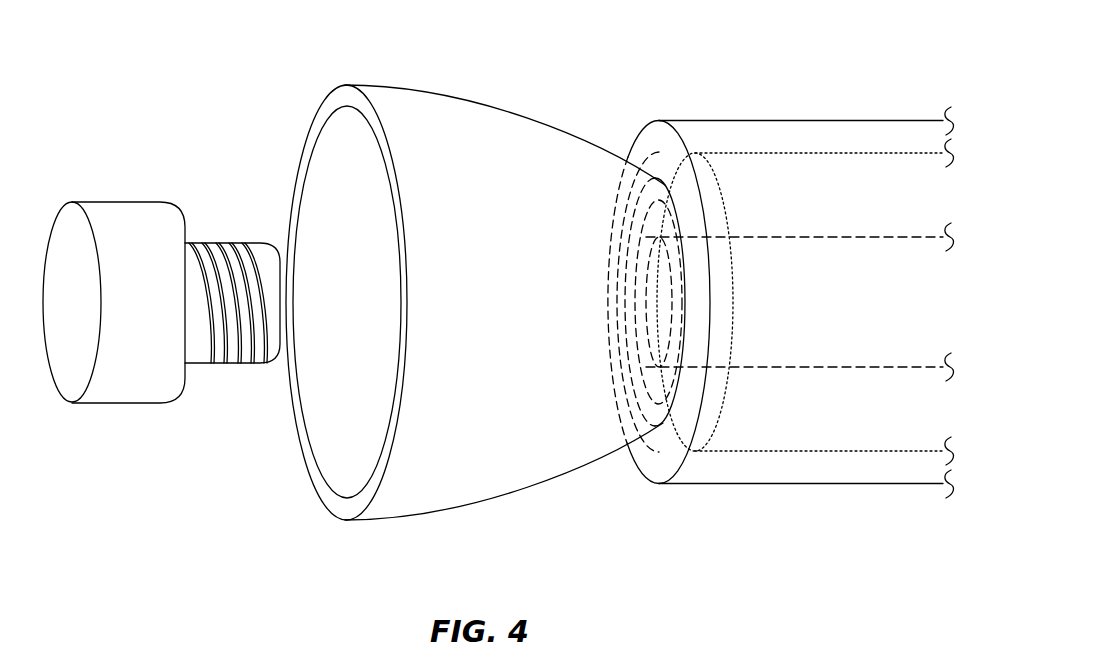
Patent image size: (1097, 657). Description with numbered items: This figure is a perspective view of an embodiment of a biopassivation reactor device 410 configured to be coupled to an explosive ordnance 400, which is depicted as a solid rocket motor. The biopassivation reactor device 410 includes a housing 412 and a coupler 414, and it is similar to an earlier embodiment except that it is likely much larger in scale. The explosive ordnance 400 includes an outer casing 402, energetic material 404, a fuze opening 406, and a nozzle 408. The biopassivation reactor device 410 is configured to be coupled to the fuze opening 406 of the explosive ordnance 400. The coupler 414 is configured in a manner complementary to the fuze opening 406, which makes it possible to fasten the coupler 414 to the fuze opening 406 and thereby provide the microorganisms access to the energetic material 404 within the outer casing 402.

The explosive ordnance 400 is at (553, 84).
The outer casing 402 is at (755, 470).
The energetic material 404 is at (872, 435).
The fuze opening 406 is at (660, 424).
The nozzle 408 is at (510, 473).
The biopassivation reactor device 410 is at (139, 192).
The housing 412 is at (73, 370).
The coupler 414 is at (220, 242).